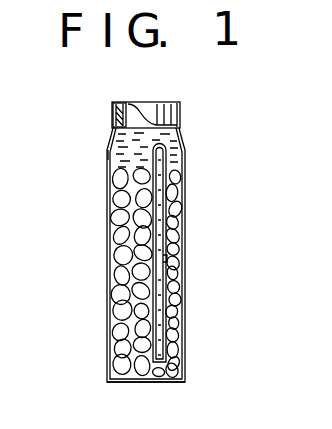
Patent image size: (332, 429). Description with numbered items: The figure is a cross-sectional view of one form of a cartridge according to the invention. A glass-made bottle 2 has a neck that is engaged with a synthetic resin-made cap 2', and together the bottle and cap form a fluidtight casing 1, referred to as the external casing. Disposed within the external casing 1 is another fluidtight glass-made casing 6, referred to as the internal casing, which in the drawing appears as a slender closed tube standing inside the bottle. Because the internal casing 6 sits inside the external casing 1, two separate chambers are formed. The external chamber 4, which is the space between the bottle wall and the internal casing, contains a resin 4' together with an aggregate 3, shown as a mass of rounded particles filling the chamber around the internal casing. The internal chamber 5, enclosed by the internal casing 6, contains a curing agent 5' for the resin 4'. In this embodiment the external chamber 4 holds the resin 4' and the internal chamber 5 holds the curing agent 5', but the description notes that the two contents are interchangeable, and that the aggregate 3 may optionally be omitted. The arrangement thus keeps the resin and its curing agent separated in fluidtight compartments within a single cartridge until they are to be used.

The casing 1 is at (190, 326).
The bottle 2 is at (117, 161).
The cap 2' is at (89, 127).
The aggregate 3 is at (122, 265).
The external chamber 4 is at (174, 253).
The resin 4' is at (73, 167).
The internal chamber 5 is at (193, 253).
The curing agent 5' is at (199, 263).
The internal casing 6 is at (185, 177).